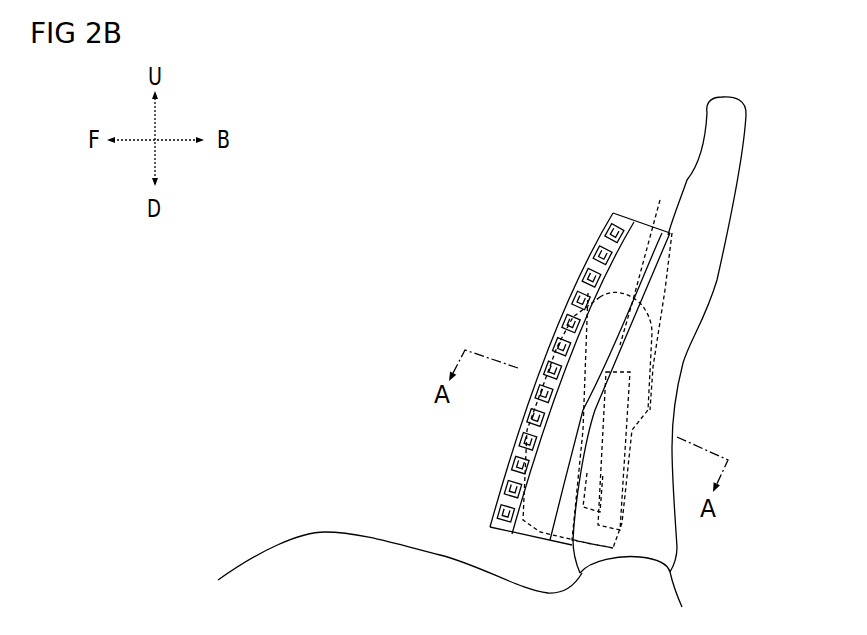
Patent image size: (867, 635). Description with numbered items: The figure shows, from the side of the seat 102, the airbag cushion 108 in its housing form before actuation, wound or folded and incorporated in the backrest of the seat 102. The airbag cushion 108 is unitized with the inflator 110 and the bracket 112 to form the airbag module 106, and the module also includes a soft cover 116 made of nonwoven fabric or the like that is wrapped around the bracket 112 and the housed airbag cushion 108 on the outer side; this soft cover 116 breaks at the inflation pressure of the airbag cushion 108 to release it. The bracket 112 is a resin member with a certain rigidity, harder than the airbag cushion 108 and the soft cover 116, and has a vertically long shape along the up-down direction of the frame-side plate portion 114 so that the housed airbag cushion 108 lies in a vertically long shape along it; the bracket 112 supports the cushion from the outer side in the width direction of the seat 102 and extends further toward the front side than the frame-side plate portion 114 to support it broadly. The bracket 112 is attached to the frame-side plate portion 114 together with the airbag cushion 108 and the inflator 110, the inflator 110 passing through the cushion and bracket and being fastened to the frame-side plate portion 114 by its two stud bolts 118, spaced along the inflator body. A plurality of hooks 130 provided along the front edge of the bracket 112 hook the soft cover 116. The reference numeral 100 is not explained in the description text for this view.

The vehicle seat 100 is at (501, 226).
The seat 102 is at (737, 97).
The airbag module 106 is at (550, 345).
The airbag cushion 108 is at (648, 257).
The inflator 110 is at (640, 370).
The bracket 112 is at (624, 214).
The frame-side plate portion 114 is at (722, 240).
The soft cover 116 is at (587, 262).
The stud bolt 118 is at (614, 412).
The hook 130 is at (612, 226).